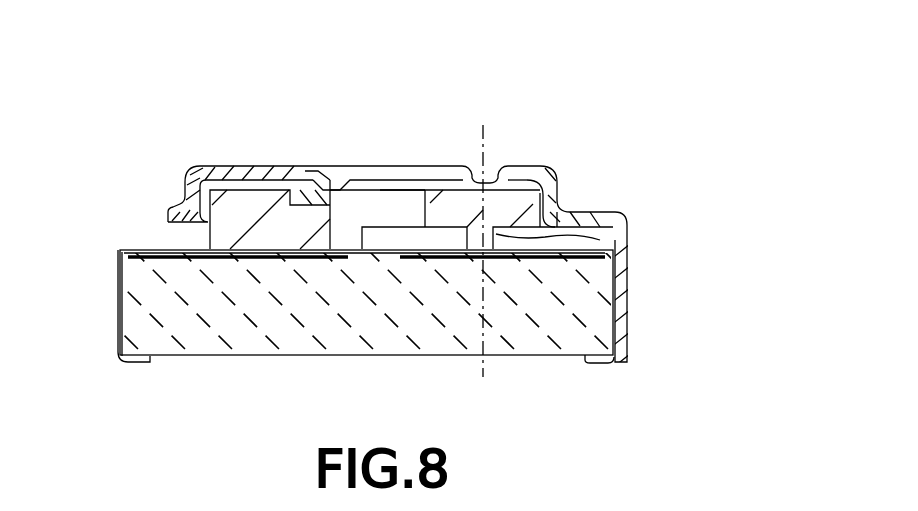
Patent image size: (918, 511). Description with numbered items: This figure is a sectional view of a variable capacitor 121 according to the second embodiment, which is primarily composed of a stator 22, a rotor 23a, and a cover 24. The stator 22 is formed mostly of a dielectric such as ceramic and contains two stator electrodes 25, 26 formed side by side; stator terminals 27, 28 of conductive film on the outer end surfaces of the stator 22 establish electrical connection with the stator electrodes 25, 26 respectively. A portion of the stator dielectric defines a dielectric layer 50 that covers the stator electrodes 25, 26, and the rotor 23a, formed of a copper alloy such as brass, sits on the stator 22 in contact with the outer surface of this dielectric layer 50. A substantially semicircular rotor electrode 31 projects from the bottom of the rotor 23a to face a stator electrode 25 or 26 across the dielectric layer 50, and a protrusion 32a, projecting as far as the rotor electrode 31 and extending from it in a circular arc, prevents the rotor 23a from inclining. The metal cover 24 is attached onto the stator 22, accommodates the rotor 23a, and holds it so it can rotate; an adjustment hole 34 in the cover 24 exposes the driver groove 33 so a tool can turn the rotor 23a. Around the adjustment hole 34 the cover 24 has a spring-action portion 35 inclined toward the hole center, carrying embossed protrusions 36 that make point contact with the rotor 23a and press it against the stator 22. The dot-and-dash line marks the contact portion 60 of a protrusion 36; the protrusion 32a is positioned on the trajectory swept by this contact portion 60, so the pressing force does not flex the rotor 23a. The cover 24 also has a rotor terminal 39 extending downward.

The variable capacitor 121 is at (173, 54).
The stator 22 is at (336, 357).
The rotor 23a is at (413, 191).
The cover 24 is at (548, 168).
The stator electrode 25 is at (232, 256).
The stator electrode 26 is at (455, 257).
The stator terminal 27 is at (119, 300).
The stator terminal 28 is at (602, 363).
The rotor electrode 31 is at (246, 217).
The protrusion 32a is at (600, 238).
The driver groove 33 is at (343, 228).
The adjustment hole 34 is at (300, 165).
The spring-action portion 35 is at (249, 168).
The protrusion 36 is at (330, 227).
The rotor terminal 39 is at (628, 318).
The dielectric layer 50 is at (148, 252).
The contact portion 60 is at (483, 133).